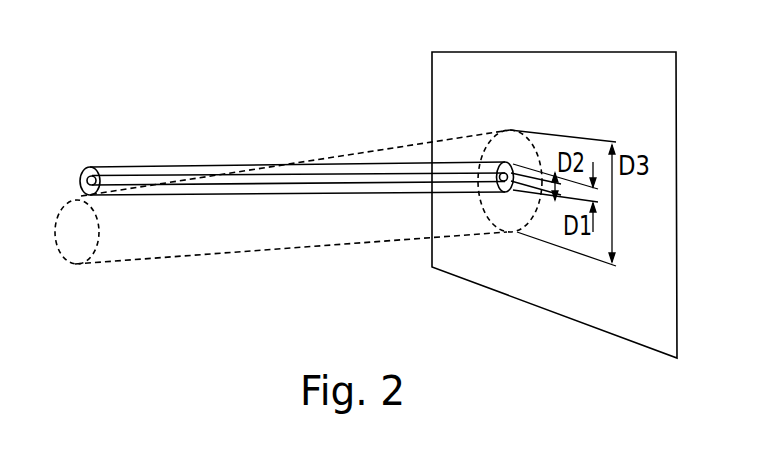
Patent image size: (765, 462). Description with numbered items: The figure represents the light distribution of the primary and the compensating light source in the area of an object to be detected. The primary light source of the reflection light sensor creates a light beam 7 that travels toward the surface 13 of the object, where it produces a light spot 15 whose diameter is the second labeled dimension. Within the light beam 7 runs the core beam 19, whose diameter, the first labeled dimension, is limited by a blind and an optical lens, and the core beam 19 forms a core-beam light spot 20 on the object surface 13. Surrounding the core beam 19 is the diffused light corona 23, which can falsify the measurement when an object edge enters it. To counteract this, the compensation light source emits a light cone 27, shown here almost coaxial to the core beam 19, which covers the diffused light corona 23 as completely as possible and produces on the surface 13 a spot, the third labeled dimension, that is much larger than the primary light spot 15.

The light beam 7 is at (114, 166).
The surface of an object 13 is at (606, 90).
The light spot 15 is at (508, 156).
The core beam 19 is at (133, 176).
The core-beam light spot 20 is at (508, 186).
The diffused light corona 23 is at (90, 167).
The light cone 27 is at (397, 238).